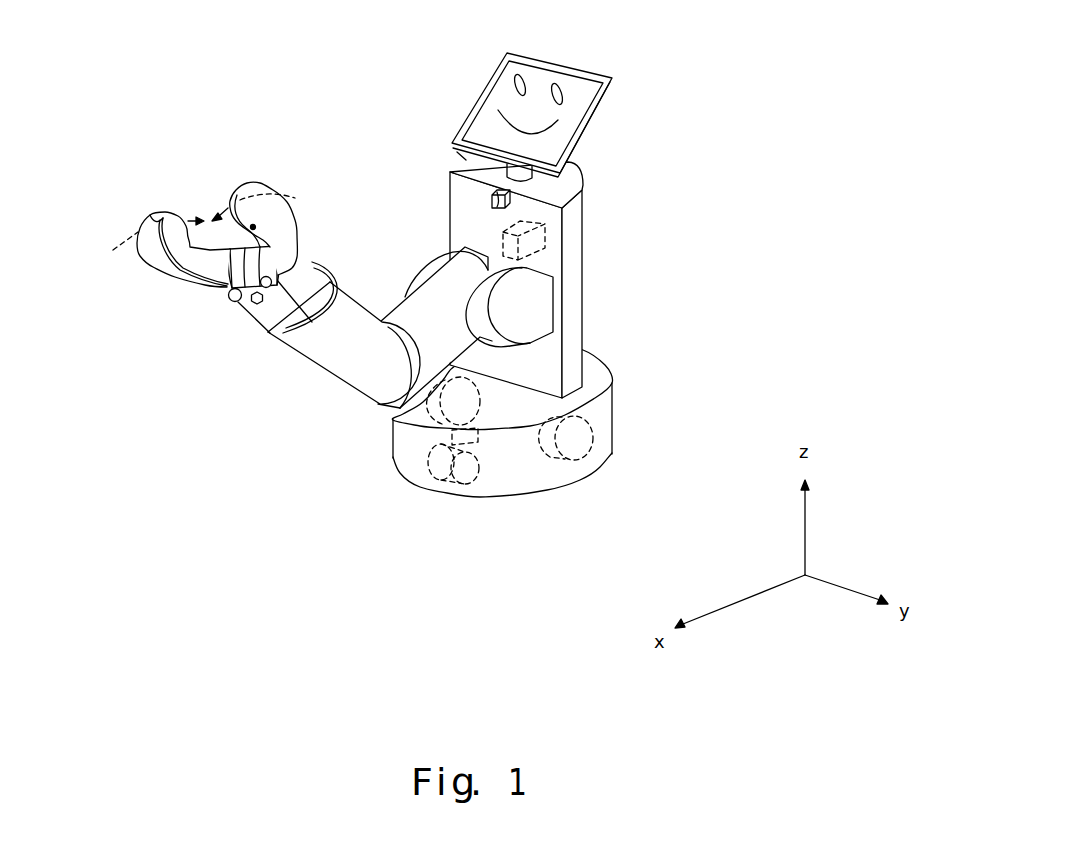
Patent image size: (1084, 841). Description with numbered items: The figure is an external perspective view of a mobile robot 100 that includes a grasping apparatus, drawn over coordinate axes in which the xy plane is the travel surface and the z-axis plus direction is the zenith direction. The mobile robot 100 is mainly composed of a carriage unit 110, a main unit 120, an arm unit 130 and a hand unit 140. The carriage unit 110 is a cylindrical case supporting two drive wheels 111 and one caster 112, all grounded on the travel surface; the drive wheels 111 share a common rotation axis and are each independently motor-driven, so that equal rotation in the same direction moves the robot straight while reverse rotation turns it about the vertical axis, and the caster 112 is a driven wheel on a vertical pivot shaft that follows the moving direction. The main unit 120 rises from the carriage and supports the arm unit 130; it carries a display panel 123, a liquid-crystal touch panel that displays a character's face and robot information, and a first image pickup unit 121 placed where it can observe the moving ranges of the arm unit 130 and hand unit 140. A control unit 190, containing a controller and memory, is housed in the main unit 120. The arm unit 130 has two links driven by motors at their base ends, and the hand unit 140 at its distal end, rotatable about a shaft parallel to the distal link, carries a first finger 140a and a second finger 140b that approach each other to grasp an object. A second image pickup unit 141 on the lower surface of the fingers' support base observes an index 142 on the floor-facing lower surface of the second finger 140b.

The mobile robot 100 is at (416, 286).
The carriage unit 110 is at (613, 398).
The drive wheel 111 is at (588, 452).
The caster 112 is at (458, 482).
The main unit 120 is at (582, 300).
The first image pickup unit 121 is at (492, 198).
The display panel 123 is at (584, 78).
The arm unit 130 is at (427, 327).
The hand unit 140 is at (216, 262).
The first finger 140a is at (147, 214).
The second finger 140b is at (258, 183).
The second image pickup unit 141 is at (245, 302).
The index 142 is at (282, 218).
The control unit 190 is at (548, 237).